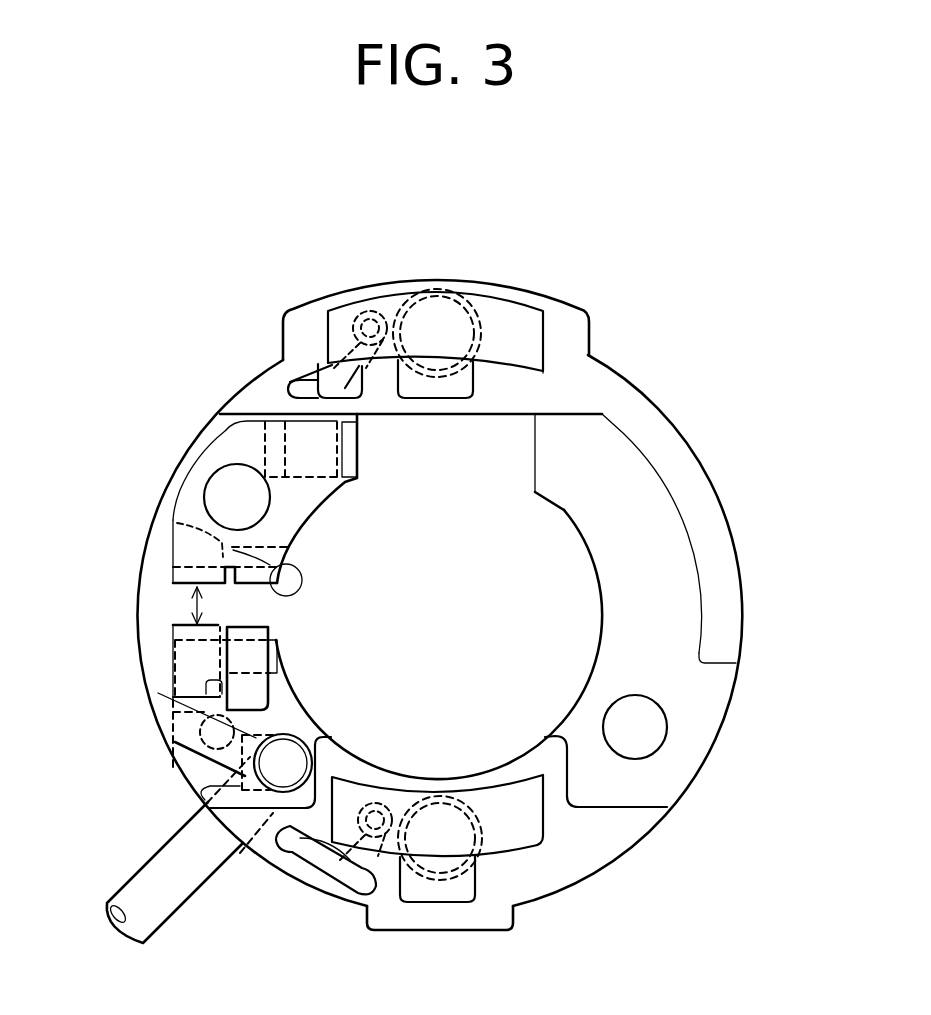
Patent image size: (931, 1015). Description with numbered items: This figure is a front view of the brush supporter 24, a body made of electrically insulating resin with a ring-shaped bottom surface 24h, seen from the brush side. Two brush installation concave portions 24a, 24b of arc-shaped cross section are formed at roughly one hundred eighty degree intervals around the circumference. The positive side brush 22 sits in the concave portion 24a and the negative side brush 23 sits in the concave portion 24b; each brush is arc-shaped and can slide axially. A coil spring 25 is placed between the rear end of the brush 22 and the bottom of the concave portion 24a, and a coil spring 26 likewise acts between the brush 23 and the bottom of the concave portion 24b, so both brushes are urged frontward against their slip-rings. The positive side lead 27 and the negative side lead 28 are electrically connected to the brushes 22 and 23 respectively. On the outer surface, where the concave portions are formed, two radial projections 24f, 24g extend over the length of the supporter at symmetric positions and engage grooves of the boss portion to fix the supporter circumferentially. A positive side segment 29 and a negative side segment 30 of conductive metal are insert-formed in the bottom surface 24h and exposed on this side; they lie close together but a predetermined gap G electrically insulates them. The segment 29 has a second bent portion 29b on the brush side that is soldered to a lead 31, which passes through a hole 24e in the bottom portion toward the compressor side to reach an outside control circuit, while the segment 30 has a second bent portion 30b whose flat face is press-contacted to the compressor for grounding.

The positive side brush 22 is at (525, 835).
The negative side brush 23 is at (512, 333).
The brush supporter 24 is at (693, 447).
The brush installation concave portion 24a is at (548, 820).
The brush installation concave portion 24b is at (588, 337).
The hole 24e is at (205, 790).
The projection 24f is at (397, 933).
The projection 24g is at (336, 293).
The bottom surface 24h is at (738, 690).
The coil spring 25 is at (491, 846).
The coil spring 26 is at (482, 298).
The positive side lead 27 is at (318, 870).
The negative side lead 28 is at (300, 386).
The positive side segment 29 is at (178, 763).
The second bent portion 29b is at (235, 656).
The negative side segment 30 is at (208, 453).
The second bent portion 30b is at (233, 550).
The lead 31 is at (203, 878).
The gap G is at (193, 610).